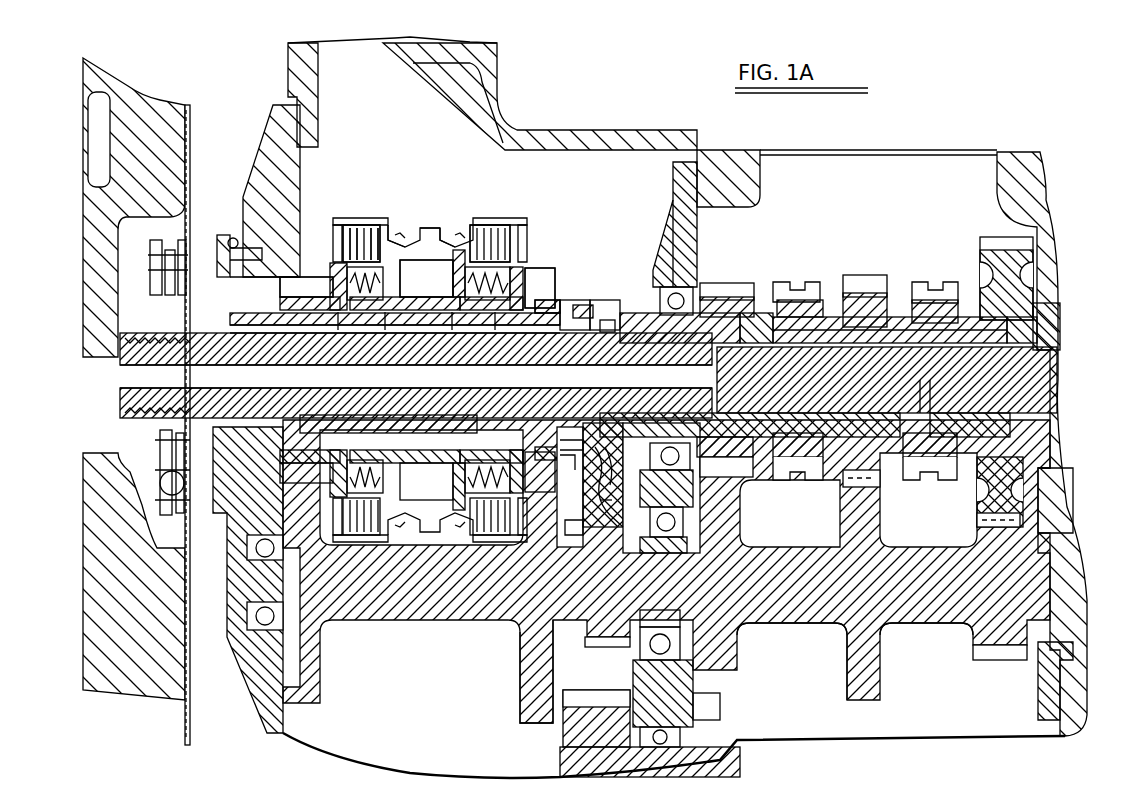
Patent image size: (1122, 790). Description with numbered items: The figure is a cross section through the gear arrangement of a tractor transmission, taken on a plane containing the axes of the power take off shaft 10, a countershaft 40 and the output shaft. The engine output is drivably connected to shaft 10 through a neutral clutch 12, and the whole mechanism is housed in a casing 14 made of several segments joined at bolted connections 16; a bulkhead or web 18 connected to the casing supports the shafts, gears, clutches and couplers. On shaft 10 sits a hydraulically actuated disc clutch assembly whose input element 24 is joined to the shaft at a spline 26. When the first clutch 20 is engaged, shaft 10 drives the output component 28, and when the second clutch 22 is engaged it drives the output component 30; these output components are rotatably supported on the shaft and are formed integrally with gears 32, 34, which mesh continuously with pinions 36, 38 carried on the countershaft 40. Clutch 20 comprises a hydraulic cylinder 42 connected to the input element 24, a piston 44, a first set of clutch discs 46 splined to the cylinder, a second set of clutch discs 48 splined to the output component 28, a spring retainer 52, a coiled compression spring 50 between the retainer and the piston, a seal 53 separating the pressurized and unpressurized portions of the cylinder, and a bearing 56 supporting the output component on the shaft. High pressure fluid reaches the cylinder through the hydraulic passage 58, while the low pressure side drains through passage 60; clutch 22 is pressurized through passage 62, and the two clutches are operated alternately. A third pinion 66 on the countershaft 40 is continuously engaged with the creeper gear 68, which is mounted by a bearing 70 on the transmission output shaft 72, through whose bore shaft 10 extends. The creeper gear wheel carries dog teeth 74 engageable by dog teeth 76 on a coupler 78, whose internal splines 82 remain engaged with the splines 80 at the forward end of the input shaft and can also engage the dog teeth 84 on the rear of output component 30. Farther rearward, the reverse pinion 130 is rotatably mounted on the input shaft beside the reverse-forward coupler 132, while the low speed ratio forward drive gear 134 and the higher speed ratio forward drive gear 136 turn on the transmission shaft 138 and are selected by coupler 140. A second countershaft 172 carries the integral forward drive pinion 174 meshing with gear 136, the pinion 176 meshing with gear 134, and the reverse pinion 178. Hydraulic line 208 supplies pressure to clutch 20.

The power take off shaft 10 is at (120, 355).
The neutral clutch 12 is at (180, 193).
The casing 14 is at (488, 94).
The bolted connections 16 is at (673, 167).
The bulkhead or web 18 is at (673, 204).
The first clutch 20 is at (376, 140).
The second clutch 22 is at (522, 206).
The input element 24 is at (455, 376).
The spline 26 is at (525, 410).
The clutch output component 28 is at (333, 240).
The clutch output component 30 is at (528, 275).
The gear 32 is at (300, 275).
The gear 34 is at (548, 268).
The pinion 36 is at (310, 658).
The pinion 38 is at (522, 690).
The countershaft 40 is at (442, 612).
The hydraulic cylinder 42 is at (398, 222).
The piston 44 is at (418, 230).
The first set of clutch discs 46 is at (373, 228).
The second set of clutch discs 48 is at (355, 226).
The coiled compression spring 50 is at (400, 283).
The spring retainer 52 is at (338, 312).
The seal 53 is at (435, 232).
The bearing 56 is at (160, 450).
The hydraulic passage 58 is at (452, 310).
The passage 60 is at (385, 310).
The passage 62 is at (495, 310).
The pinion 66 is at (613, 650).
The creeper gear 68 is at (569, 518).
The bearing 70 is at (660, 415).
The transmission output shaft 72 is at (634, 305).
The dog teeth 74 is at (598, 503).
The dog teeth 76 is at (604, 487).
The coupler 78 is at (569, 475).
The splines 80 is at (598, 305).
The splines 82 is at (569, 457).
The dog teeth 84 is at (568, 302).
The reverse pinion 130 is at (720, 283).
The reverse-forward coupler 132 is at (802, 262).
The low speed ratio forward drive gear 134 is at (995, 237).
The higher speed ratio forward drive gear 136 is at (860, 275).
The transmission shaft 138 is at (1060, 310).
The coupler 140 is at (929, 250).
The second countershaft 172 is at (765, 548).
The forward drive pinion 174 is at (877, 667).
The pinion 176 is at (1008, 660).
The reverse pinion 178 is at (745, 667).
The line 208 is at (197, 277).